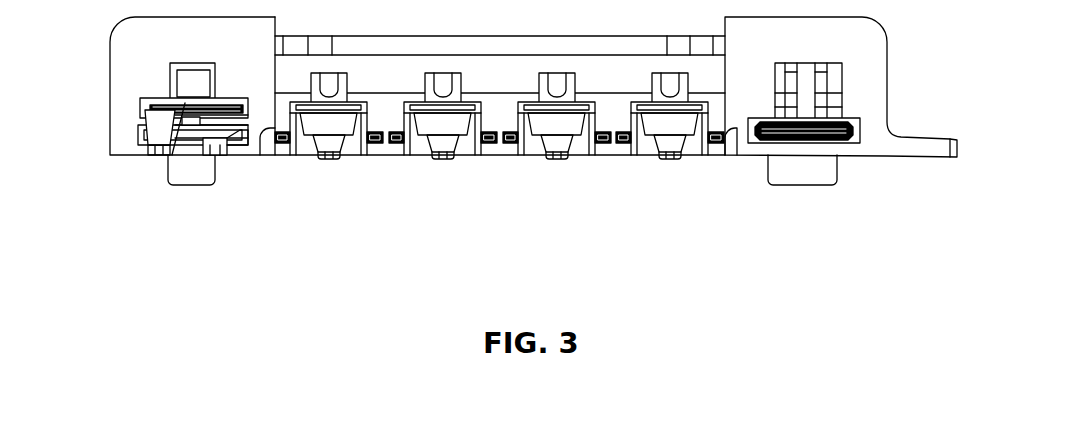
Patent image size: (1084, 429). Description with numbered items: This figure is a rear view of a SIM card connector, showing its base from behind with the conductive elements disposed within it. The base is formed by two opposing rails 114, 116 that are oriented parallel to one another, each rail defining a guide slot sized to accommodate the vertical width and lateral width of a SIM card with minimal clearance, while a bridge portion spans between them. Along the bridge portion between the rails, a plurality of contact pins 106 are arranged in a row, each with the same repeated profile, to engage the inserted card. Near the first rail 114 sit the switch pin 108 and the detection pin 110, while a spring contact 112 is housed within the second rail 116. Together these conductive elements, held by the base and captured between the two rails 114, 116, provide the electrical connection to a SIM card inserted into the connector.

The contact pins 106 is at (443, 120).
The switch pin 108 is at (222, 157).
The detection pin 110 is at (158, 155).
The spring contact 112 is at (803, 108).
The rail 114 is at (148, 70).
The rail 116 is at (860, 90).